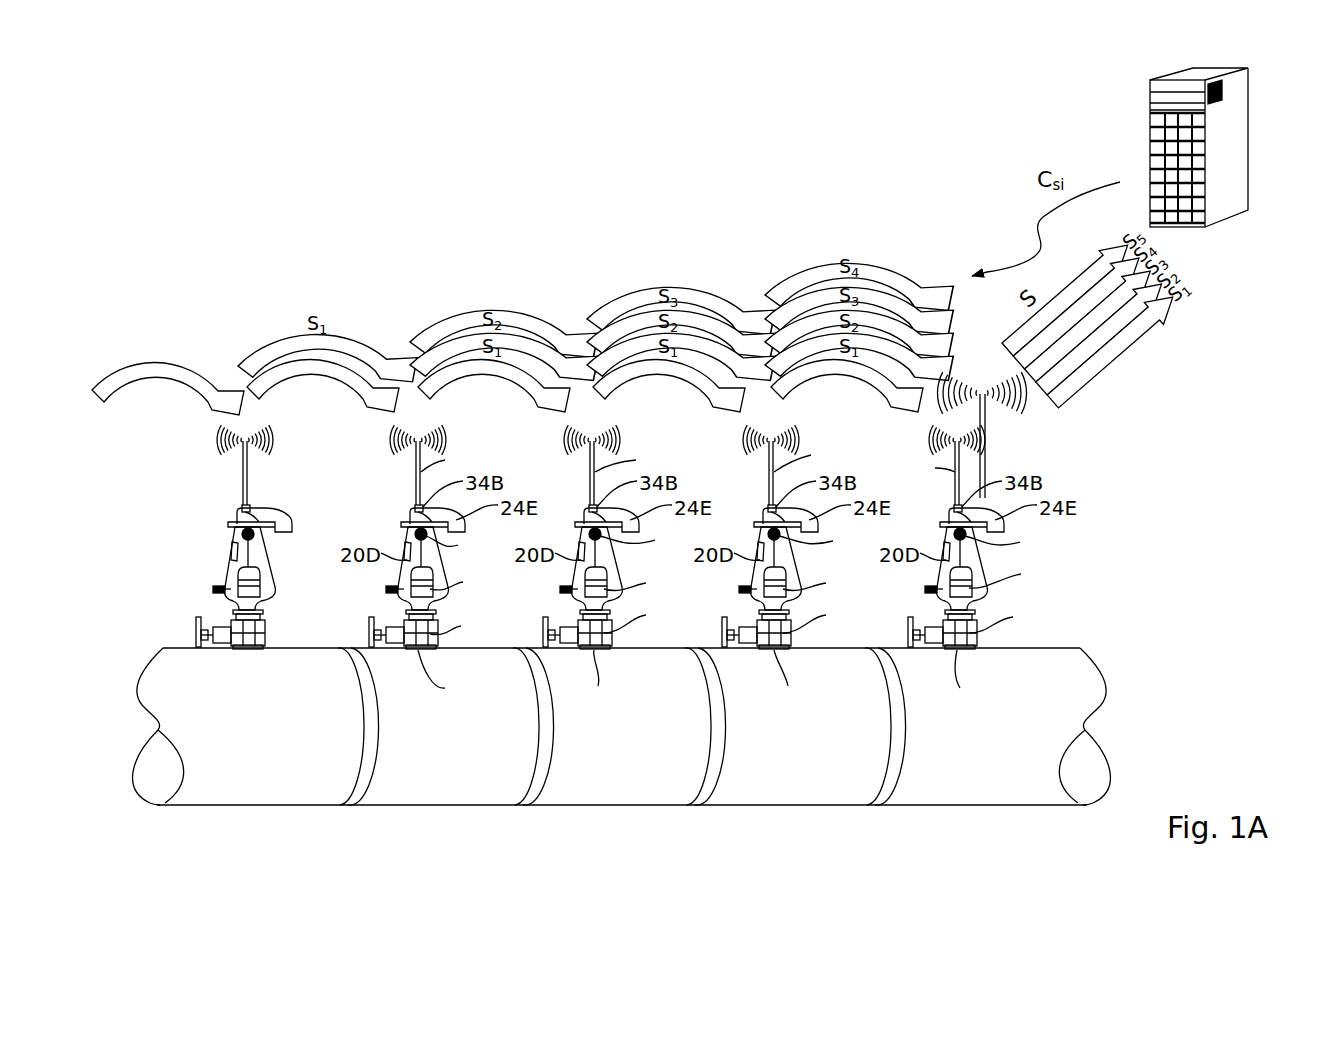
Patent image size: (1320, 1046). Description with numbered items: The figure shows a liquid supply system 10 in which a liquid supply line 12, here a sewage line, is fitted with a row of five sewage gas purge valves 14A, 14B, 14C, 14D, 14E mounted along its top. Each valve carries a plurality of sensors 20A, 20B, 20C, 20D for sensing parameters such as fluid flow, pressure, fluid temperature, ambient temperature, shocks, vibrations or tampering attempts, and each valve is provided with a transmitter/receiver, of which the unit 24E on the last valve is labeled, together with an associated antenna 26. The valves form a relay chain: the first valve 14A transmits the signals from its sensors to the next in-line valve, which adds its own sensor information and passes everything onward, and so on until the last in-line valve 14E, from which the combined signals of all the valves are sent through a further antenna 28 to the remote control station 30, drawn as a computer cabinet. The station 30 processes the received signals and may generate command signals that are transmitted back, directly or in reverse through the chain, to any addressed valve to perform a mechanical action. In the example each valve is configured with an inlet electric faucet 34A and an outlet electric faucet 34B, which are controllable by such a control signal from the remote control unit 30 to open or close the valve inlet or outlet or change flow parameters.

The liquid supply system 10 is at (318, 197).
The liquid supply line 12 is at (987, 777).
The sewage gas purge valve 14A is at (255, 563).
The sewage gas purge valve 14B is at (417, 563).
The sewage gas purge valve 14C is at (601, 563).
The sewage gas purge valve 14D is at (769, 556).
The sewage gas purge valve 14E is at (962, 563).
The sensor 20A is at (286, 547).
The sensor 20B is at (284, 582).
The sensor 20C is at (262, 626).
The sensor 20D is at (196, 554).
The transmitter/receiver 24E is at (296, 514).
The antenna 26 is at (232, 465).
The gateway antenna 28 is at (986, 444).
The remote control station 30 is at (1126, 139).
The inlet electric faucet 34A is at (231, 673).
The outlet electric faucet 34B is at (286, 491).